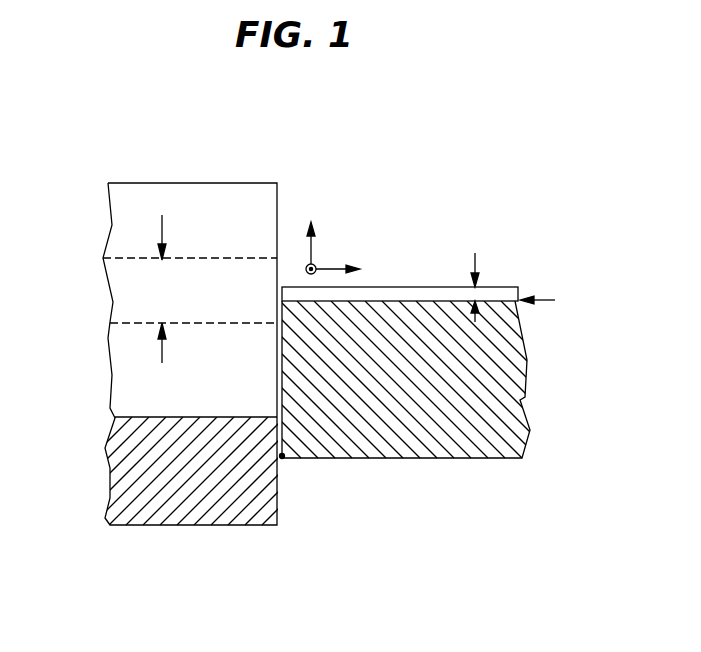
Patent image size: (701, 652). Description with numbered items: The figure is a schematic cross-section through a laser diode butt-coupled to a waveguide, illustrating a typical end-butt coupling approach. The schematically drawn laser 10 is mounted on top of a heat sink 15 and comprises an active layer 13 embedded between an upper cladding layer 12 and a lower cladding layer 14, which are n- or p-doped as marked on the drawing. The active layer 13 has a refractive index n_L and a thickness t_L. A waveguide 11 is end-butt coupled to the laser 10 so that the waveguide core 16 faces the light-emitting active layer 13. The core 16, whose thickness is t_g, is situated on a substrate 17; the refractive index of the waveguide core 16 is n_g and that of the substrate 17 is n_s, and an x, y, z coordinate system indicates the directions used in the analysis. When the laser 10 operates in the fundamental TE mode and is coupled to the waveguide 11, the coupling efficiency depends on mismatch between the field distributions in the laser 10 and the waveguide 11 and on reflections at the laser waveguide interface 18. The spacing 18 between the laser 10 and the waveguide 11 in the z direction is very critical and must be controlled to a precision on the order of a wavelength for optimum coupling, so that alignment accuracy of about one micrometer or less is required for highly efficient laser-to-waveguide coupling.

The laser 10 is at (164, 162).
The waveguide 11 is at (414, 162).
The upper cladding layer 12 is at (178, 223).
The active layer 13 is at (190, 290).
The lower cladding layer 14 is at (163, 357).
The heat sink 15 is at (120, 435).
The waveguide core 16 is at (508, 292).
The substrate 17 is at (515, 338).
The laser waveguide interface 18 is at (282, 458).